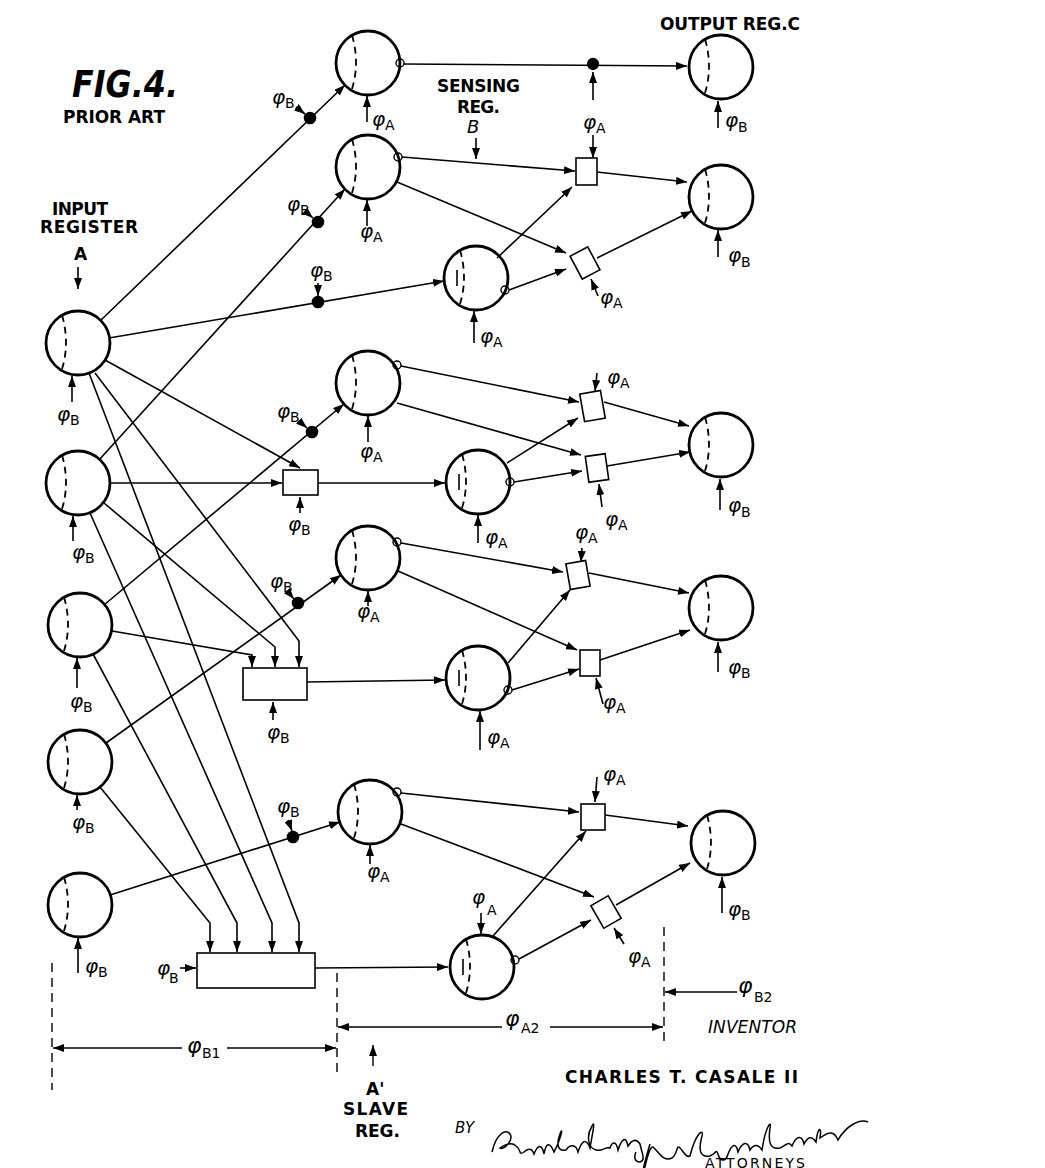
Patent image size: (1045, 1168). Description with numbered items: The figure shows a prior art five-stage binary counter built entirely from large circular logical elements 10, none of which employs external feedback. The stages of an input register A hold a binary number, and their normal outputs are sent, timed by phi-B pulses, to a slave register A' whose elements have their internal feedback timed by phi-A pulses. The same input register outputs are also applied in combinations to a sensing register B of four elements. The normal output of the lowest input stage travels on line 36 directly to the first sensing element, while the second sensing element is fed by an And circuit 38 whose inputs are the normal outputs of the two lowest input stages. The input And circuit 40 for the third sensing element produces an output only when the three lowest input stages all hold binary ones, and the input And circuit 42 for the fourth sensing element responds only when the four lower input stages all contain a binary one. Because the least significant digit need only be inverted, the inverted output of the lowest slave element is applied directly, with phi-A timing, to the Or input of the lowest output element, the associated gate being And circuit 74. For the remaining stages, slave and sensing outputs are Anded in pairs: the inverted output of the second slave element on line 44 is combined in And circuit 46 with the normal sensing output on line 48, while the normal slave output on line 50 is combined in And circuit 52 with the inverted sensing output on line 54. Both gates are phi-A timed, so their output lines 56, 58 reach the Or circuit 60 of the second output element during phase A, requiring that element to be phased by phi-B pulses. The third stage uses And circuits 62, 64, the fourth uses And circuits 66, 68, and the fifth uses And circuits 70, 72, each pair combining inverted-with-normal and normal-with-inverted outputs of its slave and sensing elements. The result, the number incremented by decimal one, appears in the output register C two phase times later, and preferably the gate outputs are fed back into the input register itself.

The logical element 10 is at (60, 374).
The line 36 is at (196, 322).
The And circuit 38 is at (318, 470).
The input And circuit 40 is at (307, 697).
The input And circuit 42 is at (274, 989).
The line 44 is at (458, 161).
The And circuit 46 is at (597, 182).
The line 48 is at (509, 252).
The line 50 is at (475, 216).
The And circuit 52 is at (592, 250).
The line 54 is at (517, 290).
The output line 56 is at (646, 176).
The output line 58 is at (649, 233).
The Or circuit 60 is at (690, 212).
The And circuit 62 is at (612, 403).
The And circuit 64 is at (607, 470).
The And circuit 66 is at (590, 570).
The And circuit 68 is at (601, 655).
The And circuit 70 is at (605, 829).
The And circuit 72 is at (616, 900).
The And circuit 74 is at (601, 46).